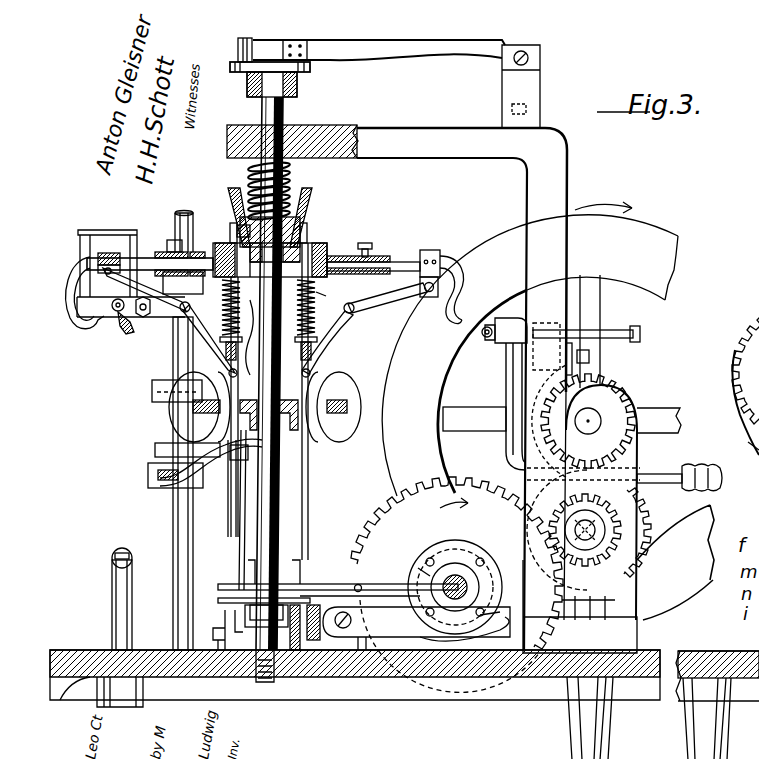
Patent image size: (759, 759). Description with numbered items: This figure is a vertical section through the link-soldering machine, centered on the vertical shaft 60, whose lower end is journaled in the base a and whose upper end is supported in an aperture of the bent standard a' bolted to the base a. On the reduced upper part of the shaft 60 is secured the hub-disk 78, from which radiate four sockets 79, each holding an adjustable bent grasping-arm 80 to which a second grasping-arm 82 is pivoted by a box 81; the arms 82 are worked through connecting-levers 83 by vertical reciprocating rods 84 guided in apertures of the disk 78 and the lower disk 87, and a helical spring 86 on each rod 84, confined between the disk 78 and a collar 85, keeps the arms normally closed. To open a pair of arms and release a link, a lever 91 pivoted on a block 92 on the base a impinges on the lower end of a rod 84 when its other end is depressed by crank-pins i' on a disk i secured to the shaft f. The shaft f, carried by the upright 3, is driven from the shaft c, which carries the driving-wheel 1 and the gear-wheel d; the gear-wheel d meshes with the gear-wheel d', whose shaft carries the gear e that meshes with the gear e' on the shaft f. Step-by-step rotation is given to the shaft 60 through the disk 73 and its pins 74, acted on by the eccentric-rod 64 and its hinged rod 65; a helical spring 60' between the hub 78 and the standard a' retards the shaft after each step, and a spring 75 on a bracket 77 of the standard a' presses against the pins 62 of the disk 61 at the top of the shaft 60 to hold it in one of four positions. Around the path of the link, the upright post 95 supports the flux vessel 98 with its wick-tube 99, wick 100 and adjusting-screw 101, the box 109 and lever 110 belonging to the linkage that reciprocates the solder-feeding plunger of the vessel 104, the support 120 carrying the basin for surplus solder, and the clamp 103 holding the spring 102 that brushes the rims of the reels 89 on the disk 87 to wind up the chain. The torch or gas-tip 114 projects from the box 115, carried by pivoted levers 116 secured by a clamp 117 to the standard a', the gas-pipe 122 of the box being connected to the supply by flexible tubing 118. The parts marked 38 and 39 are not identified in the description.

The driving-wheel 1 is at (660, 246).
The upright 3 is at (632, 466).
The cap 38 is at (112, 556).
The tube 39 is at (112, 598).
The vertical shaft 60 is at (286, 414).
The helical spring 60' is at (251, 191).
The disk 61 is at (247, 86).
The pins 62 is at (238, 47).
The eccentric-rod 64 is at (383, 590).
The hinged rod 65 is at (314, 588).
The disk 73 is at (272, 598).
The pins 74 is at (285, 556).
The spring 75 is at (428, 50).
The bracket 77 is at (540, 102).
The hub-disk 78 is at (300, 227).
The sockets 79 is at (164, 258).
The bent grasping-arm 80 is at (392, 260).
The box 81 is at (432, 252).
The grasping-arm 82 is at (403, 300).
The connecting-lever 83 is at (340, 340).
The vertical reciprocating rod 84 is at (229, 238).
The collar 85 is at (226, 348).
The helical spring 86 is at (333, 296).
The disk 87 is at (296, 425).
The reels 89 is at (172, 410).
The lever 91 is at (462, 637).
The block 92 is at (350, 650).
The upright post 95 is at (178, 592).
The vessel 98 is at (110, 230).
The wick-tube 99 is at (121, 312).
The wick 100 is at (134, 328).
The adjusting-screw 101 is at (120, 304).
The spring 102 is at (155, 448).
The clamp 103 is at (166, 500).
The vessel 104 is at (308, 200).
The box 109 is at (152, 388).
The lever 110 is at (239, 556).
The torch or gas-tip 114 is at (499, 324).
The box 115 is at (507, 344).
The pivoted levers 116 is at (608, 332).
The clamp 117 is at (591, 356).
The flexible tubing 118 is at (716, 490).
The support 120 is at (234, 460).
The gas-pipe 122 is at (508, 389).
The base a is at (404, 704).
The bent standard a' is at (514, 390).
The shaft c is at (598, 418).
The gear-wheel d is at (659, 406).
The gear-wheel d' is at (620, 545).
The gear e is at (585, 557).
The gear e' is at (455, 584).
The shaft f is at (458, 584).
The disk i is at (424, 561).
The crank-pins i' is at (495, 598).